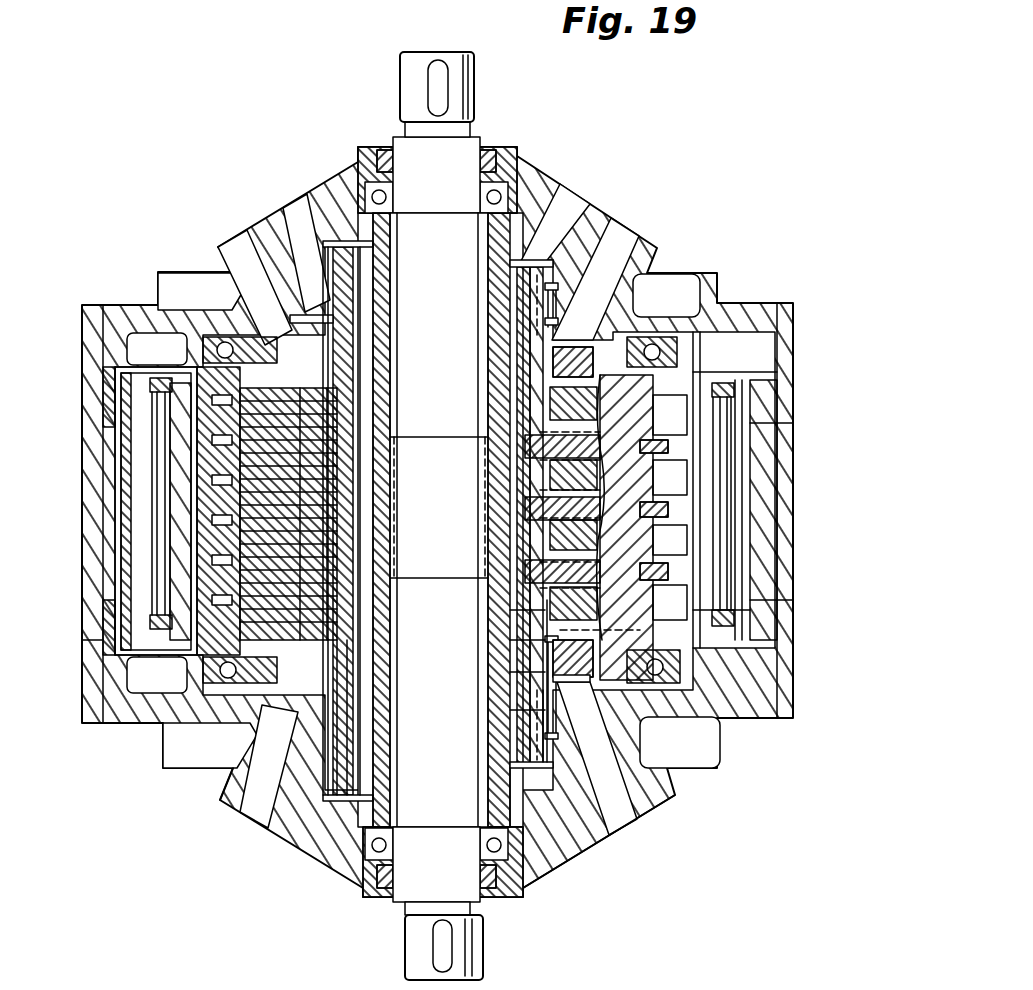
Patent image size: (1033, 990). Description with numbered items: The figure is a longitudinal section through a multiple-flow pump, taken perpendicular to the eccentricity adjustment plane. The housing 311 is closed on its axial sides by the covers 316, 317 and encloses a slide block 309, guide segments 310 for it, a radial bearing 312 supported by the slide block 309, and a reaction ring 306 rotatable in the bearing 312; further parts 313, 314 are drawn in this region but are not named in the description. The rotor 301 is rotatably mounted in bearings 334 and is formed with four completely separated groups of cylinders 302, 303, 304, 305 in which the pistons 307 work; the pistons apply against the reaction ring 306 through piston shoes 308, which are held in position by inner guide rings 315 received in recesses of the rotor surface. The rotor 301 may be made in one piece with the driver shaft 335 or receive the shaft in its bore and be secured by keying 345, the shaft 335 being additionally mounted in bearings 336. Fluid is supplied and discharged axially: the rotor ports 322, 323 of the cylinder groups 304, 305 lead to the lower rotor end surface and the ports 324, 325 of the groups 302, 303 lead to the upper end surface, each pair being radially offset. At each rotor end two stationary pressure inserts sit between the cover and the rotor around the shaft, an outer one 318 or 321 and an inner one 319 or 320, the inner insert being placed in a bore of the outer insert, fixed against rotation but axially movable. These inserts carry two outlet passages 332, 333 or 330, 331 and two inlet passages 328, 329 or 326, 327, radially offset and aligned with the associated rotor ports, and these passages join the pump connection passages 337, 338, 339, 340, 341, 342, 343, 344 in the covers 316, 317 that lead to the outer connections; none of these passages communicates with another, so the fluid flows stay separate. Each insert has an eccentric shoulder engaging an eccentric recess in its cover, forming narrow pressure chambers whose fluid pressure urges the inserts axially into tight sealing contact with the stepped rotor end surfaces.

The rotor 301 is at (655, 330).
The group of cylinders 302 is at (517, 407).
The group of cylinders 303 is at (530, 478).
The group of cylinders 304 is at (530, 532).
The group of cylinders 305 is at (350, 587).
The reaction ring 306 is at (130, 612).
The piston 307 is at (335, 400).
The piston shoe 308 is at (200, 515).
The slide block 309 is at (135, 625).
The guide segment 310 is at (112, 470).
The housing 311 is at (105, 672).
The radial bearing 312 is at (667, 573).
The clip 313 is at (680, 477).
The clip 314 is at (698, 597).
The inner guide ring 315 is at (725, 495).
The cover 316 is at (770, 320).
The cover 317 is at (707, 740).
The outer pressure insert 318 is at (543, 705).
The inner pressure insert 319 is at (503, 782).
The inner pressure insert 320 is at (505, 264).
The outer pressure insert 321 is at (530, 333).
The rotor port 322 is at (503, 645).
The rotor port 323 is at (503, 593).
The rotor port 324 is at (517, 458).
The rotor port 325 is at (563, 383).
The inlet passage 326 is at (517, 672).
The inlet passage 327 is at (533, 740).
The inlet passage 328 is at (537, 356).
The inlet passage 329 is at (517, 282).
The outlet passage 330 is at (360, 782).
The outlet passage 331 is at (330, 692).
The outlet passage 332 is at (337, 347).
The outlet passage 333 is at (363, 265).
The bearing 334 is at (683, 332).
The driver shaft 335 is at (452, 96).
The bearing 336 is at (513, 178).
The pump connection passage 337 is at (573, 830).
The pump connection passage 338 is at (630, 783).
The pump connection passage 339 is at (568, 212).
The pump connection passage 340 is at (630, 248).
The pump connection passage 341 is at (310, 865).
The pump connection passage 342 is at (240, 800).
The pump connection passage 343 is at (323, 200).
The pump connection passage 344 is at (263, 240).
The keying 345 is at (493, 511).